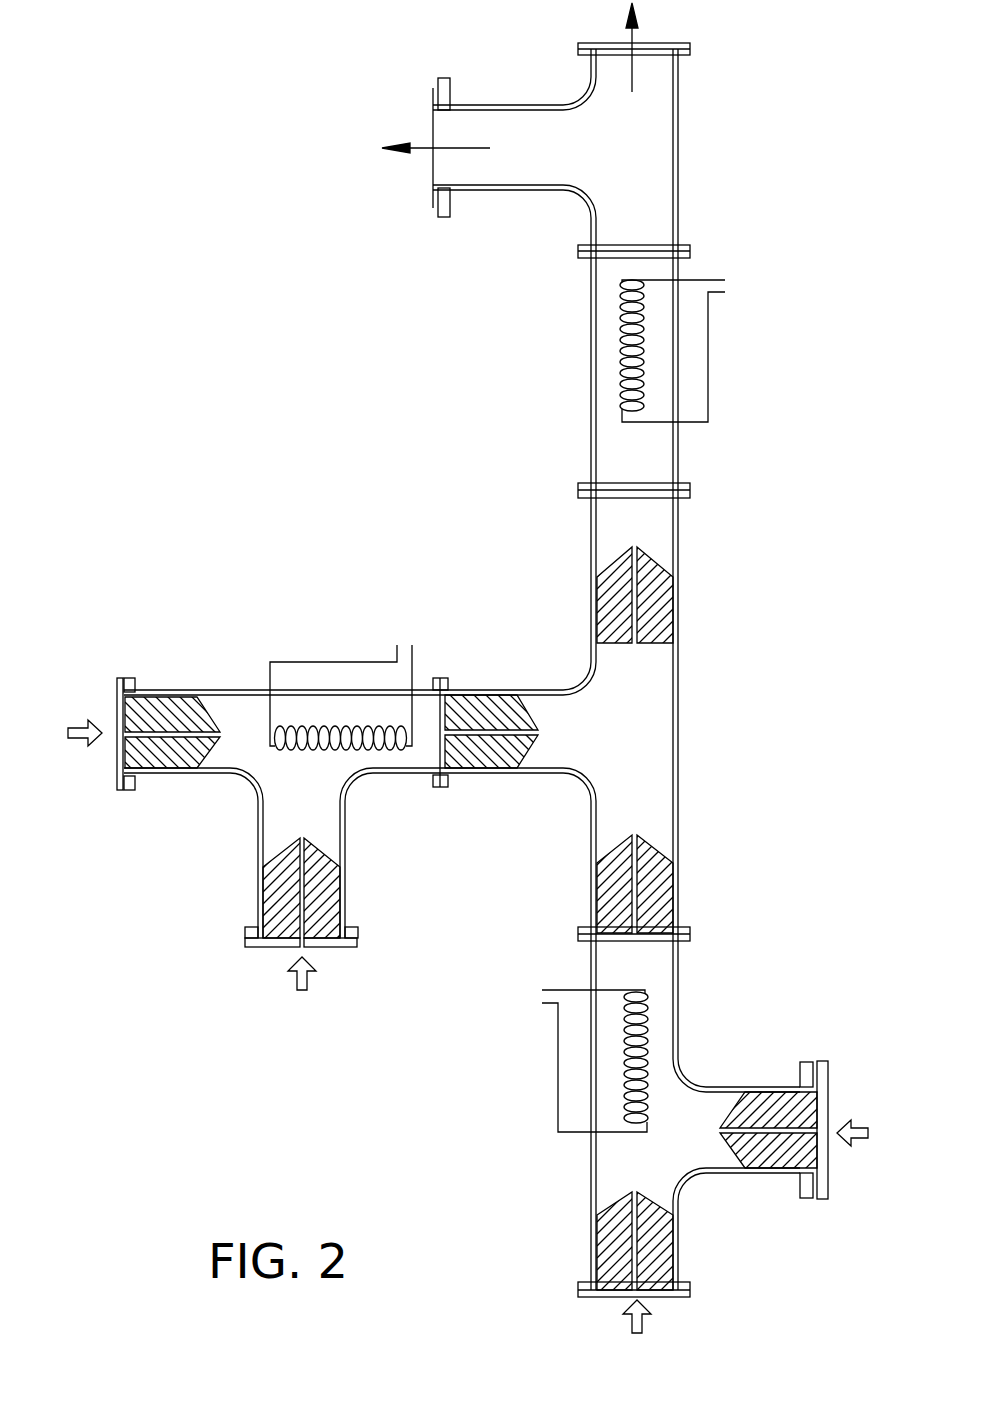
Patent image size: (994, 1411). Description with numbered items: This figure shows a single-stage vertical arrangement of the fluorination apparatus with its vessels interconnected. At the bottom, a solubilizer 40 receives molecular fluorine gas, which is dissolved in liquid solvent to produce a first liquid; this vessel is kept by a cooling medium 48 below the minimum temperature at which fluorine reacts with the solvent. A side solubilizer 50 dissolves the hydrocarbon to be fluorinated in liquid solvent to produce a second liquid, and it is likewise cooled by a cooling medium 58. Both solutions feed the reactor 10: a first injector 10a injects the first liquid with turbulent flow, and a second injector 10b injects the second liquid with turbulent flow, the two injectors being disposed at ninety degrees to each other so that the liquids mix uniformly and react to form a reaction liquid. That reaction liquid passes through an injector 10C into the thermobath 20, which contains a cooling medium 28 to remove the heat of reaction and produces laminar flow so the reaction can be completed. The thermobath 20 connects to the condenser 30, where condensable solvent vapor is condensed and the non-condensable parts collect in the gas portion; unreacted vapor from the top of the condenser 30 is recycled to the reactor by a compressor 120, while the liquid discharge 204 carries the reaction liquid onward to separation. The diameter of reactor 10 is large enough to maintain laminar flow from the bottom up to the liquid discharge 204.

The reactor 10 is at (640, 752).
The first injector 10a is at (665, 886).
The second injector 10b is at (458, 708).
The injector 10C is at (663, 620).
The thermobath 20 is at (655, 465).
The cooling medium 28 is at (691, 347).
The condenser 30 is at (655, 175).
The solubilizer 40 is at (643, 1173).
The cooling medium 48 is at (576, 1057).
The solubilizer 50 is at (265, 762).
The cooling medium 58 is at (344, 683).
The liquid discharge 204 is at (396, 149).
The compressor 120 is at (572, 47).